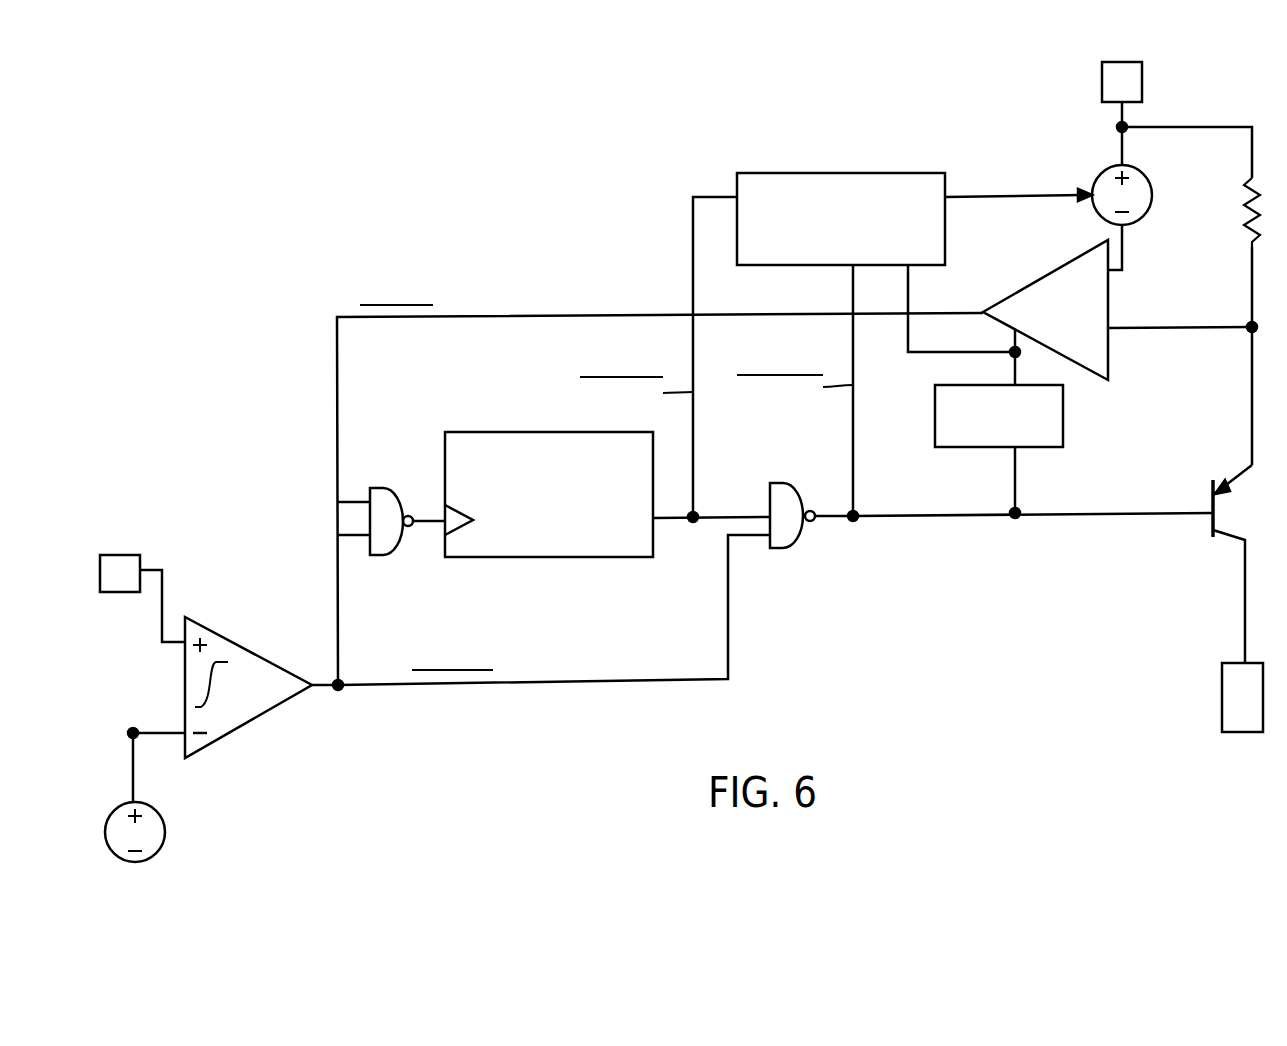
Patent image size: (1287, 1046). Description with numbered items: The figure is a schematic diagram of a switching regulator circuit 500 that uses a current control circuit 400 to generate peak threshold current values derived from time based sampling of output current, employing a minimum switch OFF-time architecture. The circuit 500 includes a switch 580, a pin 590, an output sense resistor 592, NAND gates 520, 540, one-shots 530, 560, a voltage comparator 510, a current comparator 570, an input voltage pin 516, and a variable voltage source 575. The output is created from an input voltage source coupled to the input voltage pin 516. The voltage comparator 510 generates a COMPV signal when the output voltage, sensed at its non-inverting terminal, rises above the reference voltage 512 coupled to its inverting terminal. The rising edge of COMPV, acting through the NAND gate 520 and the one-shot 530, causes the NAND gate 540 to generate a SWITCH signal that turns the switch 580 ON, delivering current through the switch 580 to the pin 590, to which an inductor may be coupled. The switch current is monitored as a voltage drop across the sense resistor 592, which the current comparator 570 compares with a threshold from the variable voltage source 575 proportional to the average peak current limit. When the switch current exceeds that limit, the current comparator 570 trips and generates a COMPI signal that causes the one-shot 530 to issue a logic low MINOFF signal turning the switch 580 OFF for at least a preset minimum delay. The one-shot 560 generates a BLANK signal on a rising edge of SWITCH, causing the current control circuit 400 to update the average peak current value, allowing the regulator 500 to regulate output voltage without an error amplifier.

The switching regulator circuit 500 is at (237, 230).
The current control circuit 400 is at (758, 173).
The voltage comparator 510 is at (208, 626).
The reference voltage 512 is at (165, 838).
The input voltage pin 516 is at (1142, 72).
The NAND gate 520 is at (377, 488).
The one-shot 530 is at (480, 432).
The NAND gate 540 is at (773, 483).
The one-shot 560 is at (1063, 408).
The current comparator 570 is at (1073, 259).
The variable voltage source 575 is at (1145, 170).
The switch 580 is at (1208, 527).
The pin 590 is at (1222, 693).
The output sense resistor 592 is at (1247, 208).